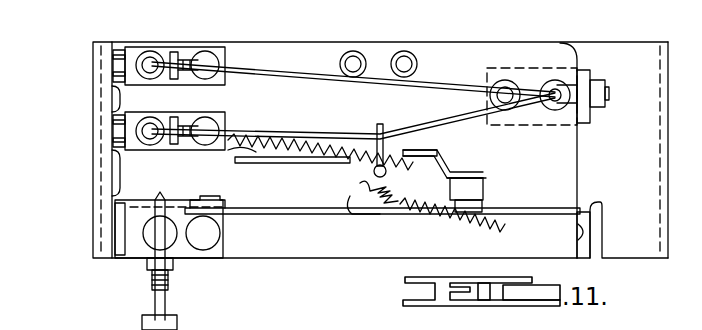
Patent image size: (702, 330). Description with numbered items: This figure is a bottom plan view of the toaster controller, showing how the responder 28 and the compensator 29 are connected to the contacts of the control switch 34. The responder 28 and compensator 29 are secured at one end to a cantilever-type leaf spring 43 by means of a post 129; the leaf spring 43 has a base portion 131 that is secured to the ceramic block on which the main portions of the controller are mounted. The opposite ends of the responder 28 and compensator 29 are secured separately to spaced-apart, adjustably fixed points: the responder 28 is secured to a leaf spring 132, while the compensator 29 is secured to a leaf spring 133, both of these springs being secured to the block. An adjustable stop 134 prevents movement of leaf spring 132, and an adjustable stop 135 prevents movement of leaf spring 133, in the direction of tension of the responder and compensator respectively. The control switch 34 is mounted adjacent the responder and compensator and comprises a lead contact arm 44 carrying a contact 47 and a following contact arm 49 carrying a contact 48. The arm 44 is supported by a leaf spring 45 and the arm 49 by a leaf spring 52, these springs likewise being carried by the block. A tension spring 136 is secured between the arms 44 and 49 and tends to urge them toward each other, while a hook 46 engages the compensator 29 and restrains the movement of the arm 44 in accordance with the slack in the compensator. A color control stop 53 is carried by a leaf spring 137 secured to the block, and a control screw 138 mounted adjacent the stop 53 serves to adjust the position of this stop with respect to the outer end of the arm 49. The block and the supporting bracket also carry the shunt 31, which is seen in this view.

The responder 28 is at (264, 62).
The compensator 29 is at (286, 134).
The shunt 31 is at (366, 218).
The control switch 34 is at (488, 185).
The leaf spring 43 is at (594, 72).
The lead contact arm 44 is at (322, 178).
The leaf spring 45 is at (236, 160).
The hook 46 is at (382, 136).
The contact 47 is at (454, 174).
The contact 48 is at (486, 206).
The following contact arm 49 is at (306, 214).
The leaf spring 52 is at (592, 208).
The color control stop 53 is at (210, 196).
The post 129 is at (554, 90).
The base portion 131 is at (498, 68).
The leaf spring 132 is at (144, 60).
The leaf spring 133 is at (120, 140).
The adjustable stop 134 is at (188, 56).
The adjustable stop 135 is at (194, 124).
The tension spring 136 is at (404, 216).
The leaf spring 137 is at (118, 193).
The control screw 138 is at (170, 278).